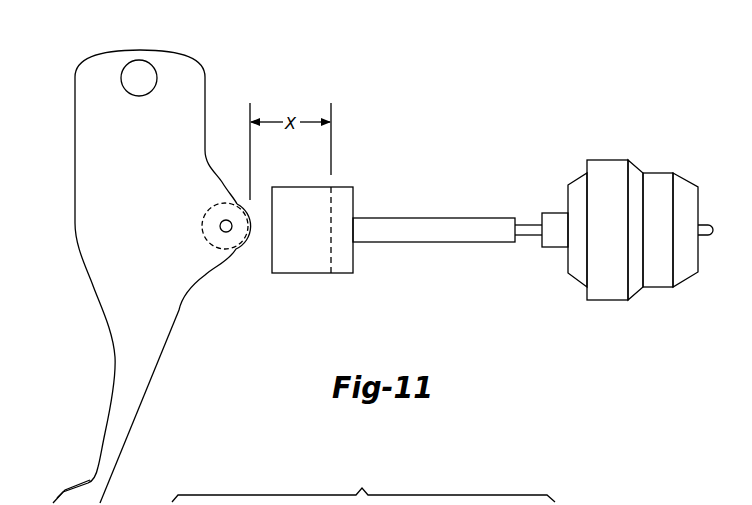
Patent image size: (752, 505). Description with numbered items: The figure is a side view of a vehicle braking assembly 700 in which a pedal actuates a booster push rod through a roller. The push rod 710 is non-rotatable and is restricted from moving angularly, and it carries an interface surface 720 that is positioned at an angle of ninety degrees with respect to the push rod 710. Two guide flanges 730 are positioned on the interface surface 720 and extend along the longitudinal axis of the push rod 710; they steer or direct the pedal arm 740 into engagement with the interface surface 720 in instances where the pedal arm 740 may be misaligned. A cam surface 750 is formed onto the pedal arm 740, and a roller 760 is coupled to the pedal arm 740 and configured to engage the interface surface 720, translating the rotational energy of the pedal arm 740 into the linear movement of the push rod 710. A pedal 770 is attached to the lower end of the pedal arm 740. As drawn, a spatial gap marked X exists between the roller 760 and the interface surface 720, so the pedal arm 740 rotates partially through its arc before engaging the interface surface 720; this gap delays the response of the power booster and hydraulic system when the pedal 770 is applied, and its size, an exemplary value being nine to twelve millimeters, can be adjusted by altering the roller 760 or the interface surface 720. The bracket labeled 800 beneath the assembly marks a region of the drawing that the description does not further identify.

The vehicle braking assembly 700 is at (94, 47).
The push rod 710 is at (435, 218).
The interface surface 720 is at (337, 197).
The guide flanges 730 is at (307, 263).
The pedal arm 740 is at (127, 418).
The cam surface 750 is at (203, 263).
The roller 760 is at (203, 220).
The pedal 770 is at (55, 502).
The assembly region 800 is at (363, 485).